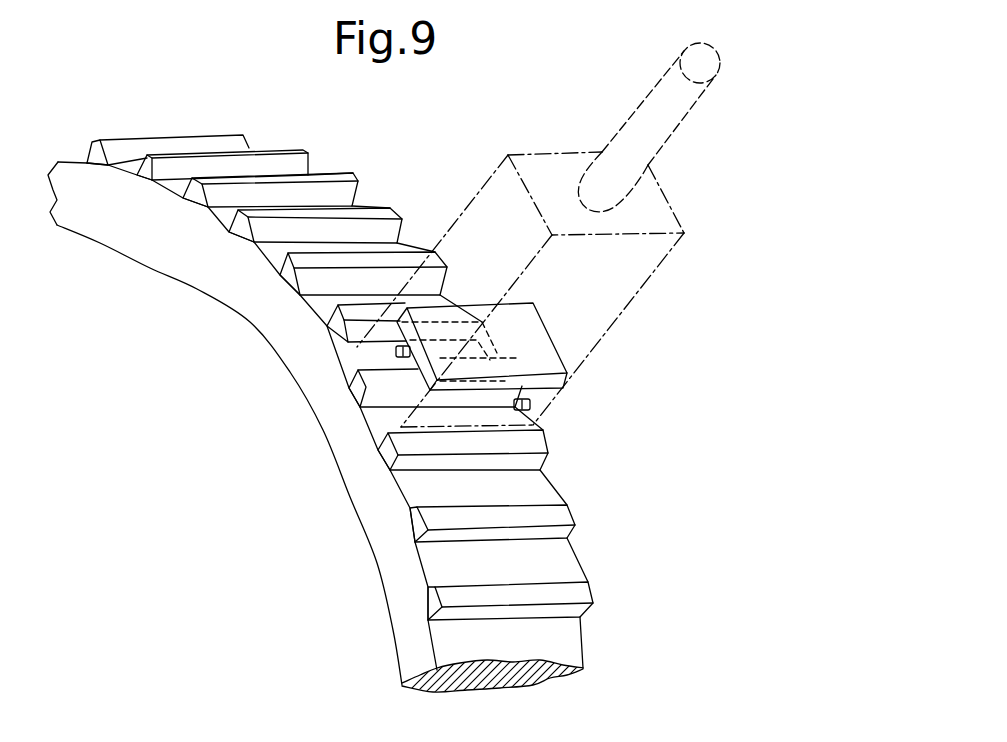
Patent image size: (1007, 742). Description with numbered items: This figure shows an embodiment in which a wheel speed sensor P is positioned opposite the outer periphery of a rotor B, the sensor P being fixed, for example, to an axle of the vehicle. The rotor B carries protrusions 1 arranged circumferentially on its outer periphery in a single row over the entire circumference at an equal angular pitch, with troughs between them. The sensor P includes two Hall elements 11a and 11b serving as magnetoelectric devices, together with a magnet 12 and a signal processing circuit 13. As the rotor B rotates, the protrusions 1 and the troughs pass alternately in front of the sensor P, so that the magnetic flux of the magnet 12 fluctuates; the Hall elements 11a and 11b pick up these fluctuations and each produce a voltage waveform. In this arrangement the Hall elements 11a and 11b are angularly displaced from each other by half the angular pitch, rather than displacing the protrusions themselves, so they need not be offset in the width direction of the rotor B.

The protrusions 1 is at (145, 156).
The rotor B is at (190, 273).
The wheel speed sensor P is at (602, 290).
The magnet 12 is at (547, 355).
The signal processing circuit 13 is at (487, 363).
The Hall element 11a is at (410, 328).
The Hall element 11b is at (532, 412).